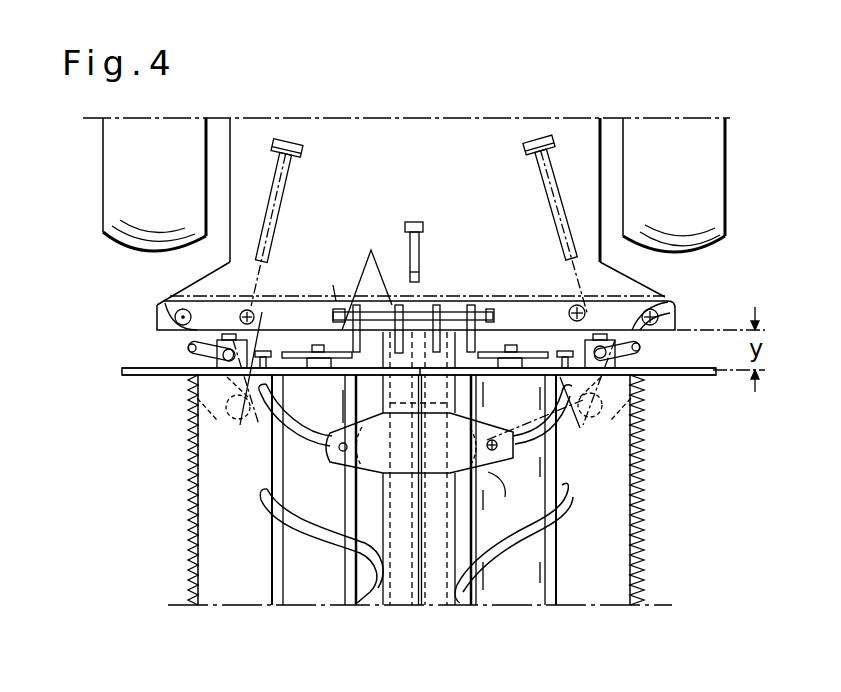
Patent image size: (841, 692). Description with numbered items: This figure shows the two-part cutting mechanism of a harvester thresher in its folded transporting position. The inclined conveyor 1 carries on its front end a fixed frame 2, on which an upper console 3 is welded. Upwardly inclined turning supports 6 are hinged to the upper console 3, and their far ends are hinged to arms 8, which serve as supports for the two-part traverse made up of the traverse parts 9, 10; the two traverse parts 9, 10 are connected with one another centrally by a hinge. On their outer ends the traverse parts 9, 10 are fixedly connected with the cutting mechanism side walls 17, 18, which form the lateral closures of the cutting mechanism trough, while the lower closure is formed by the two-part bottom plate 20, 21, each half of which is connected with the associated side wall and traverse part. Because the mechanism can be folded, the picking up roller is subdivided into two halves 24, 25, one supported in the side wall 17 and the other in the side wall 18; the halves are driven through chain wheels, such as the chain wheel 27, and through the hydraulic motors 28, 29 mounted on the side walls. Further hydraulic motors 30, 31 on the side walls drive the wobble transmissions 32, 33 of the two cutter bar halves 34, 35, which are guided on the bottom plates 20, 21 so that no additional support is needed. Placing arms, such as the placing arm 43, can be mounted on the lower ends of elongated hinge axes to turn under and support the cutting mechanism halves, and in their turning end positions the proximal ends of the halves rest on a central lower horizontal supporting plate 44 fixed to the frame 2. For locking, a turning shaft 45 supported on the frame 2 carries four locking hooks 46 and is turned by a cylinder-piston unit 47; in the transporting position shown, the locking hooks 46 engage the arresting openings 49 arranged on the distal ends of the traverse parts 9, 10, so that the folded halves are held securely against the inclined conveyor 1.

The inclined conveyor 1 is at (407, 133).
The fixed frame 2 is at (501, 300).
The upper console 3 is at (195, 315).
The turning support 6 is at (291, 330).
The arm 8 is at (343, 525).
The traverse part 9 is at (433, 577).
The traverse part 10 is at (405, 590).
The cutting mechanism side wall 17 is at (648, 377).
The cutting mechanism side wall 18 is at (178, 373).
The bottom plate 20 is at (618, 545).
The bottom plate 21 is at (222, 547).
The picking up roller half 24 is at (533, 585).
The picking up roller half 25 is at (326, 583).
The chain wheel 27 is at (264, 480).
The hydraulic motor 28 is at (557, 450).
The hydraulic motor 29 is at (240, 425).
The hydraulic motor 30 is at (577, 305).
The hydraulic motor 31 is at (251, 300).
The wobble transmission 32 is at (615, 330).
The wobble transmission 33 is at (243, 300).
The cutter bar half 34 is at (638, 500).
The cutter bar half 35 is at (190, 497).
The placing arm 43 is at (217, 385).
The central lower horizontal supporting plate 44 is at (472, 305).
The turning shaft 45 is at (333, 285).
The locking hook 46 is at (371, 250).
The cylinder-piston unit 47 is at (425, 245).
The arresting opening 49 is at (497, 305).